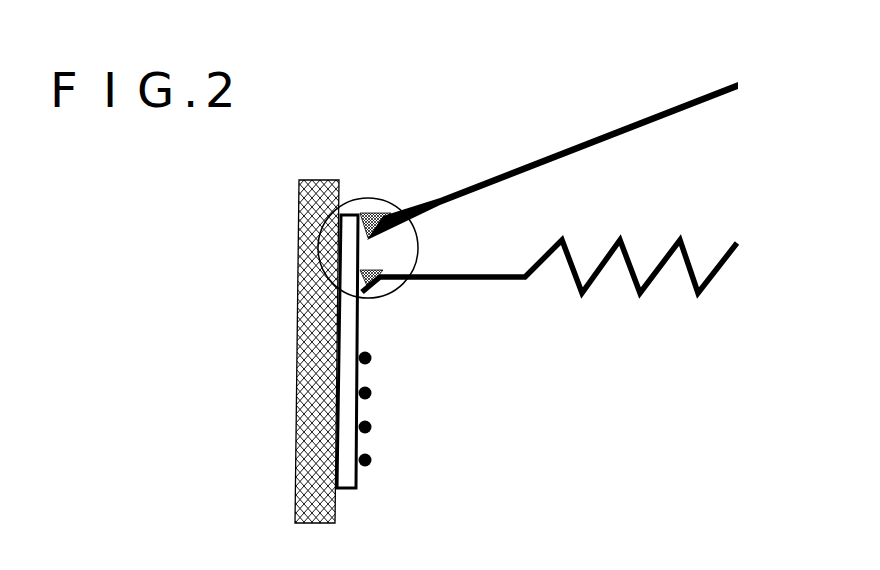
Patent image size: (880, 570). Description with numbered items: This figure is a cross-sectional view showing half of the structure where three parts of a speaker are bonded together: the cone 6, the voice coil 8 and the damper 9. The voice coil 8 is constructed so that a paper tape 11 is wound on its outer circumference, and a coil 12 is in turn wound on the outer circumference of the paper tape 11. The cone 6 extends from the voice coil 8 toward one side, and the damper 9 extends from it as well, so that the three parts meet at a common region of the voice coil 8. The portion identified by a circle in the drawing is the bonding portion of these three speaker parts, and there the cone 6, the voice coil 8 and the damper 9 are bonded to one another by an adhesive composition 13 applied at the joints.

The cone 6 is at (608, 135).
The voice coil 8 is at (300, 217).
The damper 9 is at (542, 262).
The paper tape 11 is at (357, 483).
The coil 12 is at (372, 428).
The adhesive composition 13 is at (374, 220).